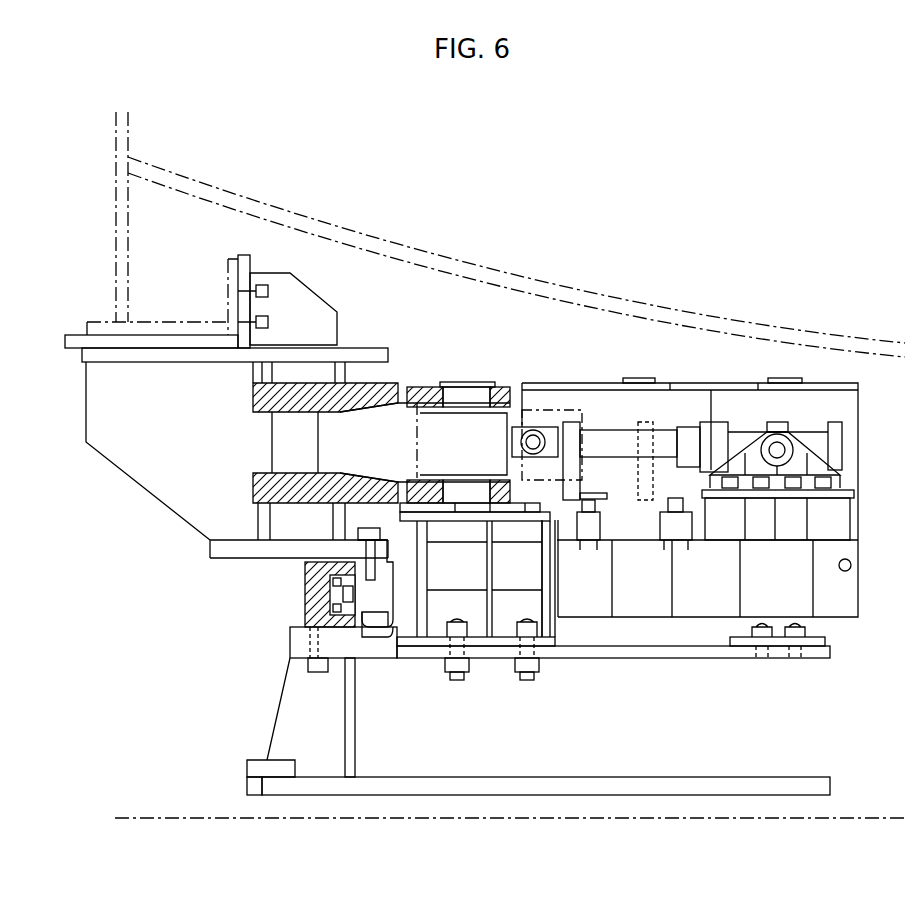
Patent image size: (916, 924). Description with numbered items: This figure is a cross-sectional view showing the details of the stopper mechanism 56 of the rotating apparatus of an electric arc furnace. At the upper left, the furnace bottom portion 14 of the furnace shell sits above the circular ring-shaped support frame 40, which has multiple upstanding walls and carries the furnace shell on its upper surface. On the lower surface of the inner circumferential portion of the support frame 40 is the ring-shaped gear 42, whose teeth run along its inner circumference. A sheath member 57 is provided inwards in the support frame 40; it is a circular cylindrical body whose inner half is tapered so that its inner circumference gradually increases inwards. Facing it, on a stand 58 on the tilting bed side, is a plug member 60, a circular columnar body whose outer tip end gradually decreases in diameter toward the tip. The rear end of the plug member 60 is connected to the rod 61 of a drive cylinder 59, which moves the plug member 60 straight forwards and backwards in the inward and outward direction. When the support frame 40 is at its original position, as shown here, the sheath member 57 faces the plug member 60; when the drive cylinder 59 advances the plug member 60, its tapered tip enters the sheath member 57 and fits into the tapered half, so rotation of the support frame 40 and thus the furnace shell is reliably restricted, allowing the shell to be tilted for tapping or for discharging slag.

The furnace bottom portion 14 is at (465, 262).
The circular ring-shaped support frame 40 is at (172, 462).
The ring-shaped gear 42 is at (390, 610).
The stopper mechanism 56 is at (688, 418).
The sheath member 57 is at (303, 392).
The stand 58 is at (493, 612).
The drive cylinder 59 is at (817, 440).
The plug member 60 is at (398, 437).
The rod 61 is at (552, 437).